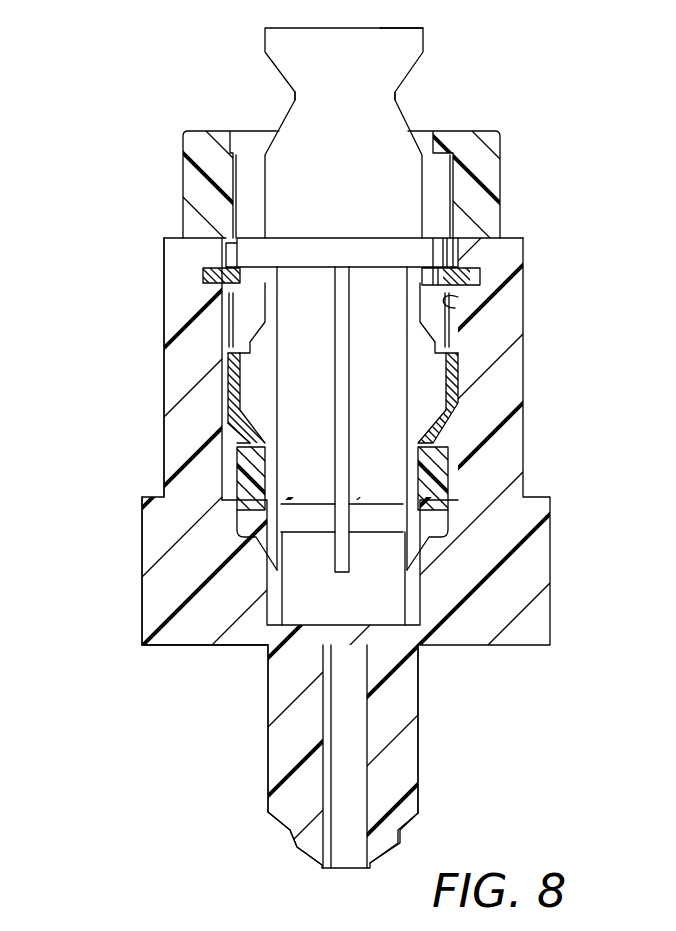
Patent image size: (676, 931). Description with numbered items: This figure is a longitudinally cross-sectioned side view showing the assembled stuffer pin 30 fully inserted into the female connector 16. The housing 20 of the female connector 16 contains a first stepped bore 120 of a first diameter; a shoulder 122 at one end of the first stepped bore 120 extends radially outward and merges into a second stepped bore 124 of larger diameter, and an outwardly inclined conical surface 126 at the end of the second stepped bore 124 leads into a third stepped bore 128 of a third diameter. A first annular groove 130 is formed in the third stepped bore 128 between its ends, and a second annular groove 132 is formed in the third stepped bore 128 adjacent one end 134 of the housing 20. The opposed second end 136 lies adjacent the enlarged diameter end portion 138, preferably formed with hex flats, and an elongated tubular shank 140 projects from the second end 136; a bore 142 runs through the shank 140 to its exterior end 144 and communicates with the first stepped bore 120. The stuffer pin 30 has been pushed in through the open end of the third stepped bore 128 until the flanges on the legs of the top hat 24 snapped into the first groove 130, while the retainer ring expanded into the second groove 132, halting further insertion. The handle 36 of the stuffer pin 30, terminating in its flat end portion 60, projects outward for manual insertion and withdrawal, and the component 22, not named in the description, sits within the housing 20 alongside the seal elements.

The female connector 16 is at (108, 575).
The housing 20 is at (163, 373).
The seal ring 22 is at (232, 490).
The top hat 24 is at (230, 418).
The stuffer pin 30 is at (318, 123).
The handle 36 is at (307, 55).
The flat end portion 60 is at (404, 30).
The first stepped bore 120 is at (412, 607).
The shoulder 122 is at (433, 524).
The second stepped bore 124 is at (448, 468).
The conical surface 126 is at (232, 430).
The third stepped bore 128 is at (456, 304).
The first annular groove 130 is at (223, 363).
The second annular groove 132 is at (207, 277).
The one end 134 is at (503, 238).
The second end 136 is at (178, 647).
The enlarged diameter end portion 138 is at (147, 597).
The tubular shank 140 is at (268, 758).
The bore 142 is at (362, 780).
The exterior end 144 is at (302, 858).